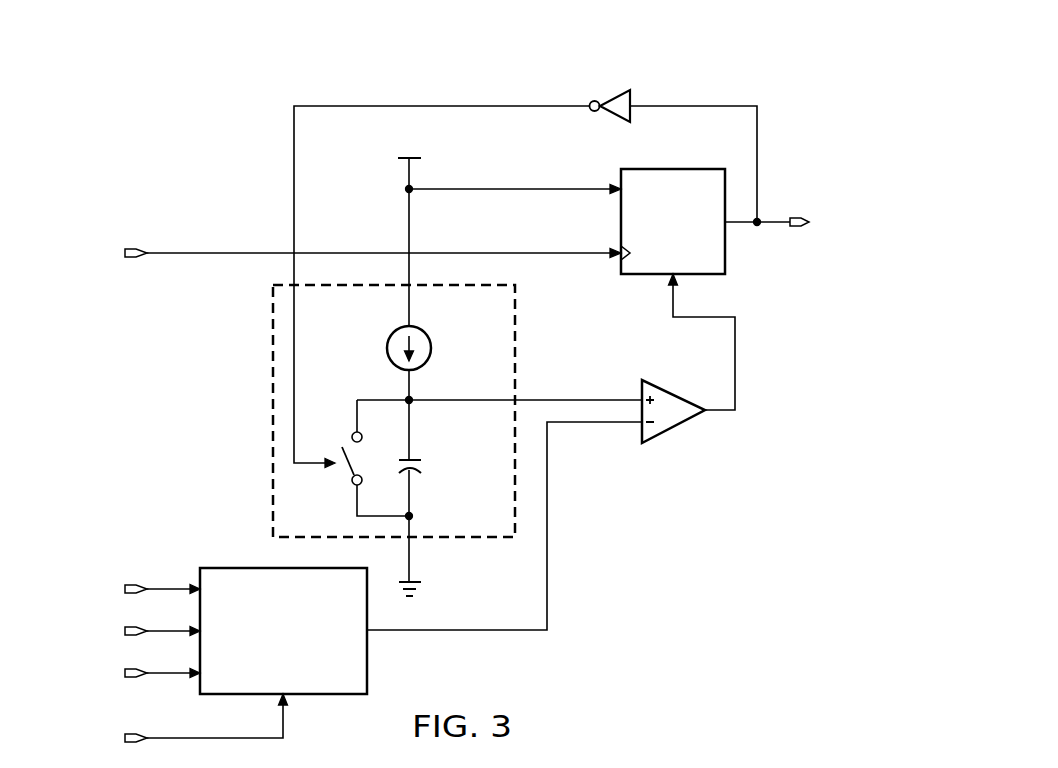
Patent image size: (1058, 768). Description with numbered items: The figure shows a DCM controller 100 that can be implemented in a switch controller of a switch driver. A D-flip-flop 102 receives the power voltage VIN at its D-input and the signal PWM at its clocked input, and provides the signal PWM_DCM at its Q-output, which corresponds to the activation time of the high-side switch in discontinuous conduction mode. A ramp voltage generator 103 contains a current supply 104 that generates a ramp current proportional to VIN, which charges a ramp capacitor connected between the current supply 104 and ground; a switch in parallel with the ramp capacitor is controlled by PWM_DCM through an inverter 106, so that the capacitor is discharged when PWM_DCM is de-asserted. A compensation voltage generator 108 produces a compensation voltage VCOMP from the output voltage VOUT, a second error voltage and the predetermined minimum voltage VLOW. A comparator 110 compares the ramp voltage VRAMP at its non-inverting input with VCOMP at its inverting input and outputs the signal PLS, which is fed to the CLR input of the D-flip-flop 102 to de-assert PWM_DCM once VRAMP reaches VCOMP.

The DCM controller 100 is at (140, 176).
The D-flip-flop 102 is at (692, 168).
The ramp voltage generator 103 is at (265, 383).
The current supply 104 is at (388, 348).
The inverter 106 is at (615, 93).
The compensation voltage generator 108 is at (240, 568).
The comparator 110 is at (673, 430).